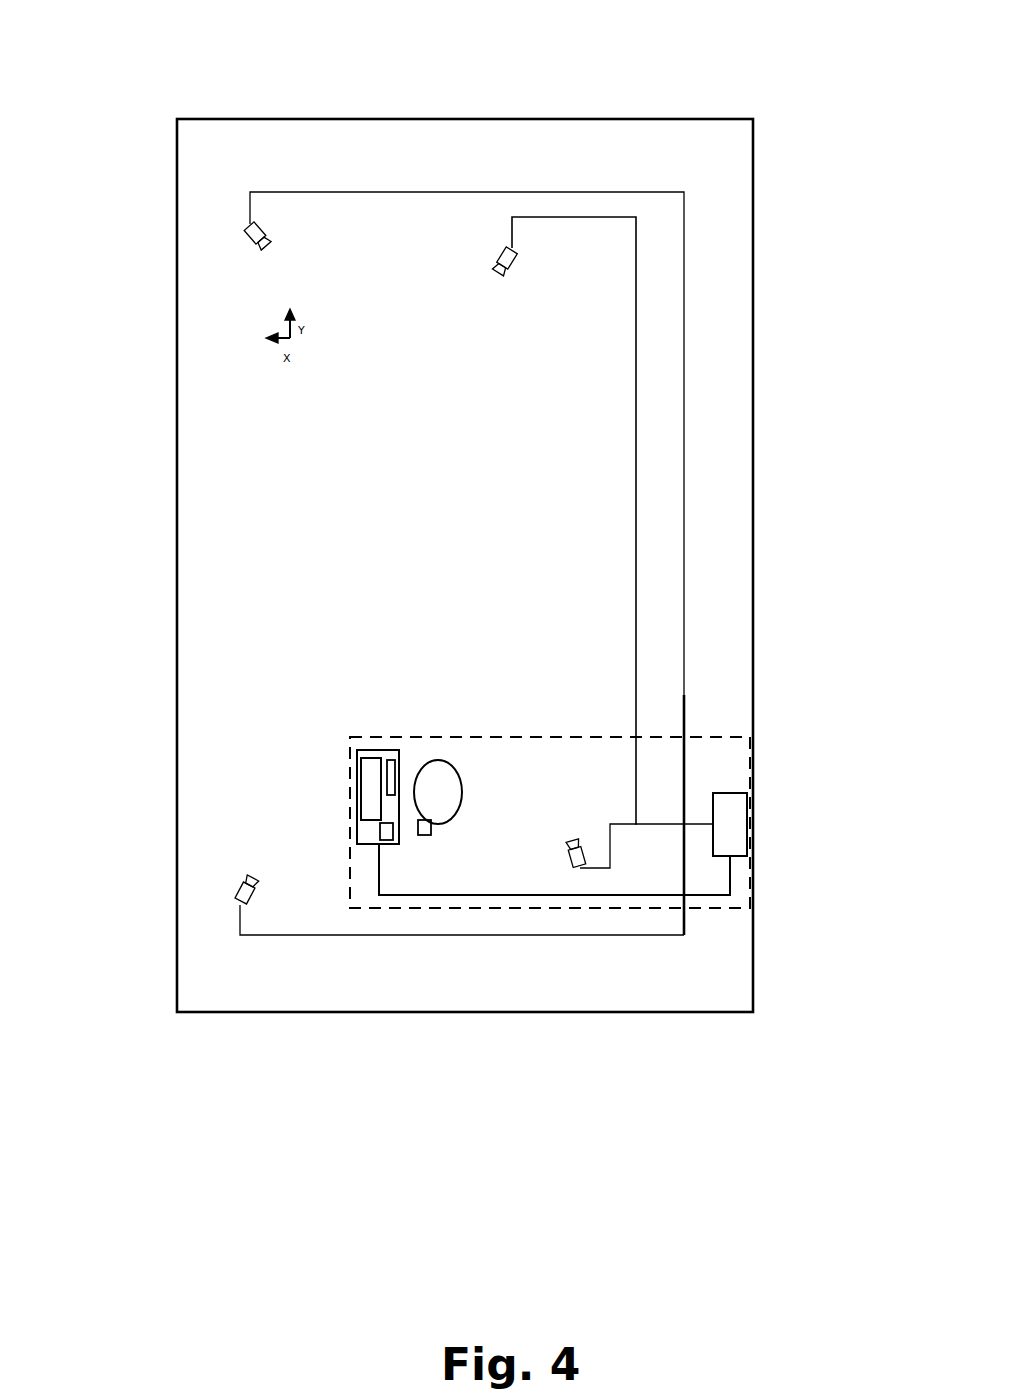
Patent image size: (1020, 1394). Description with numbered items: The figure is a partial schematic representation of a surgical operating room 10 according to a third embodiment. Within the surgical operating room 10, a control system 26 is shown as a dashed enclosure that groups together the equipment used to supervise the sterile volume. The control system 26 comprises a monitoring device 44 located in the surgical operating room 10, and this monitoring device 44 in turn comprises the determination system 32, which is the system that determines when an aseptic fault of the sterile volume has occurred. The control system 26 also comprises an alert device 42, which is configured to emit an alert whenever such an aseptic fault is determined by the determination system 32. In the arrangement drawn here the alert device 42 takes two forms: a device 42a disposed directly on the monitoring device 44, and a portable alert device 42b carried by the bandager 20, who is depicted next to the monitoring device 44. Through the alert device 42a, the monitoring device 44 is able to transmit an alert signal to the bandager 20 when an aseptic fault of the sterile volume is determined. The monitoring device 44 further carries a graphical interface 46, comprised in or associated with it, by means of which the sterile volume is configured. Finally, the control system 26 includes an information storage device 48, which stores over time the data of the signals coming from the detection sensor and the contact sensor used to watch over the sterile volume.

The surgical operating room 10 is at (486, 116).
The bandager 20 is at (455, 816).
The control system 26 is at (518, 731).
The determination system 32 is at (739, 851).
The alert device 42 is at (380, 845).
The device disposed on the monitoring device 42a is at (388, 845).
The portable alert device 42b is at (429, 836).
The monitoring device 44 is at (351, 851).
The graphical interface 46 is at (348, 787).
The information storage device 48 is at (392, 779).